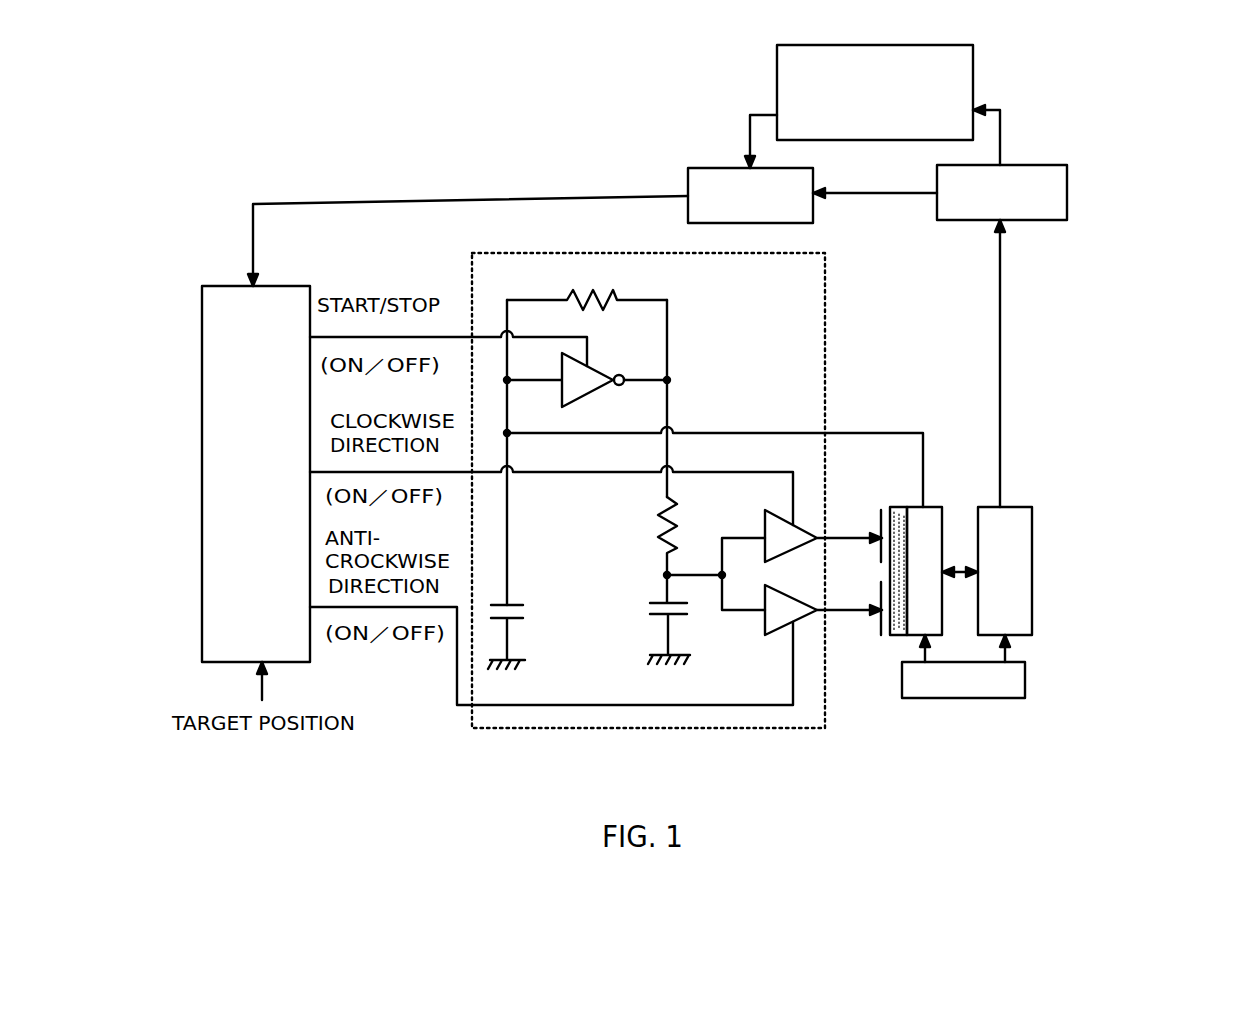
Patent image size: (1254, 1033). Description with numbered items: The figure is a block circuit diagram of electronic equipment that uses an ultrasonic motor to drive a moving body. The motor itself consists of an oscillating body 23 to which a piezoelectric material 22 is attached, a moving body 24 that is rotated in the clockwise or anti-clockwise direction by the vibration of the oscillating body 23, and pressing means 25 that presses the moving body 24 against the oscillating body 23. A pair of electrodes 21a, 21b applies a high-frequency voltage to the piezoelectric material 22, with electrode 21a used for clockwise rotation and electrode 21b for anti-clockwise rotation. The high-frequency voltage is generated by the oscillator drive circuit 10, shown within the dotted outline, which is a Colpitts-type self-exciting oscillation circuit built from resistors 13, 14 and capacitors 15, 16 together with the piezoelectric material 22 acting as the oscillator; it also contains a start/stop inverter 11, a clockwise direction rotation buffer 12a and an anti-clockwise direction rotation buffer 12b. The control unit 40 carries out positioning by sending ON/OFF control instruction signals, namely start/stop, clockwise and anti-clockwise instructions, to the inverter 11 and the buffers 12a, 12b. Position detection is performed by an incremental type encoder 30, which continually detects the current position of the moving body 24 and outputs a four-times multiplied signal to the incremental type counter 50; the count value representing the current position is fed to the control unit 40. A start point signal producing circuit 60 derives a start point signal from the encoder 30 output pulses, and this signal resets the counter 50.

The oscillator drive circuit 10 is at (805, 308).
The start/stop inverter 11 is at (593, 372).
The clockwise direction rotation buffer 12a is at (790, 528).
The anti-clockwise direction rotation buffer 12b is at (790, 617).
The resistor 13 is at (603, 291).
The resistor 14 is at (662, 503).
The capacitor 15 is at (510, 600).
The capacitor 16 is at (661, 602).
The electrode 21a is at (880, 512).
The electrode 21b is at (882, 631).
The piezoelectric material 22 is at (903, 507).
The oscillating body 23 is at (932, 518).
The moving body 24 is at (1018, 518).
The pressing means 25 is at (965, 698).
The incremental type encoder 30 is at (970, 222).
The control unit 40 is at (282, 300).
The incremental type counter 50 is at (722, 173).
The start point signal producing circuit 60 is at (968, 102).